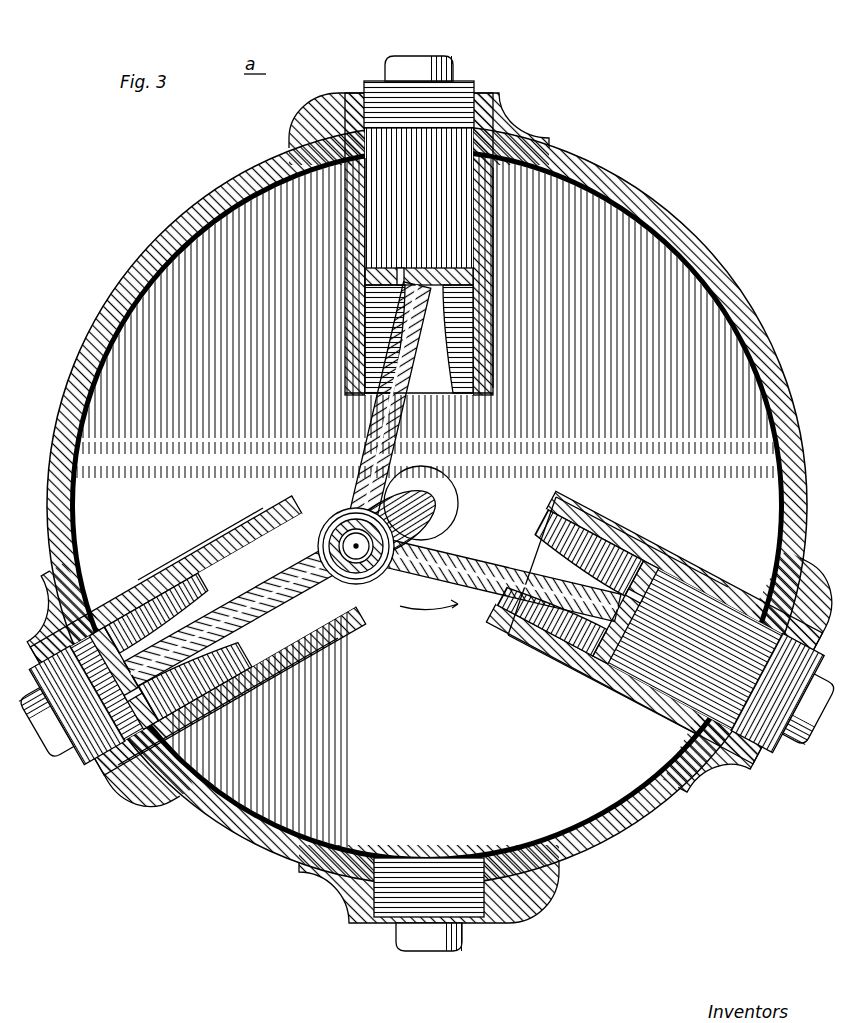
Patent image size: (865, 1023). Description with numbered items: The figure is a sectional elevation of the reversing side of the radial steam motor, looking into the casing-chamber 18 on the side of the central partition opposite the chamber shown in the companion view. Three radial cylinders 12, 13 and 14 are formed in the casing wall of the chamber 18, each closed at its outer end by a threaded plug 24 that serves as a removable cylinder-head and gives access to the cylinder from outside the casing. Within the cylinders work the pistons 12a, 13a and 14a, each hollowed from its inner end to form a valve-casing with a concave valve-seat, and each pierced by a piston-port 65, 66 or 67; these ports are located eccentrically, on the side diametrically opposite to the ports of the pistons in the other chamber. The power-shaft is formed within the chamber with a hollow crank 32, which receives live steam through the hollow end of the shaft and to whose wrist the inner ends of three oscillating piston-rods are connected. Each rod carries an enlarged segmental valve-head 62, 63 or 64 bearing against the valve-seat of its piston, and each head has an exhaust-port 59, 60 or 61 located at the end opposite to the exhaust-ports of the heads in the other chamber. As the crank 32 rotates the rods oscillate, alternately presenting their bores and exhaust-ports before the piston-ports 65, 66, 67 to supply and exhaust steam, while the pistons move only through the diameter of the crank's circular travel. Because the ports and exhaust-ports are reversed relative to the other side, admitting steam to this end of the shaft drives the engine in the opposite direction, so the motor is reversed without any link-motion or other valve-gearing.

The cylinder 12 is at (402, 196).
The piston 12a is at (437, 372).
The cylinder 13 is at (293, 642).
The piston 13a is at (159, 574).
The cylinder 14 is at (658, 630).
The piston 14a is at (563, 535).
The casing-chamber 18 is at (427, 538).
The threaded plug 24 is at (405, 48).
The crank 32 is at (428, 486).
The exhaust-port 59 is at (355, 284).
The exhaust-port 60 is at (170, 722).
The exhaust-port 61 is at (620, 533).
The valve-head 62 is at (489, 292).
The valve-head 63 is at (126, 622).
The valve-head 64 is at (557, 667).
The piston-port 65 is at (397, 275).
The piston-port 66 is at (76, 757).
The piston-port 67 is at (630, 612).